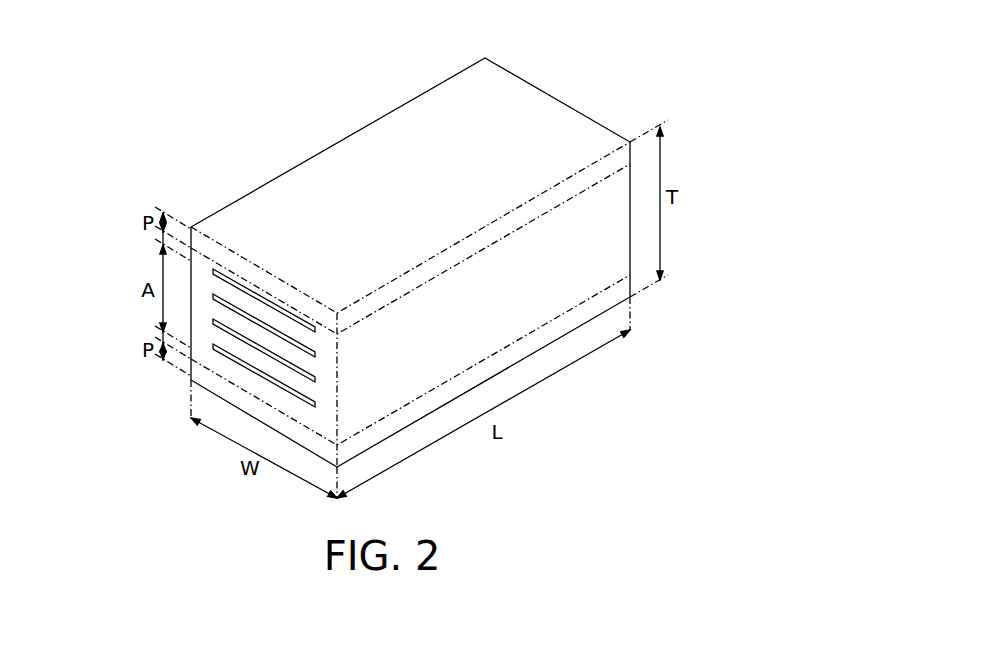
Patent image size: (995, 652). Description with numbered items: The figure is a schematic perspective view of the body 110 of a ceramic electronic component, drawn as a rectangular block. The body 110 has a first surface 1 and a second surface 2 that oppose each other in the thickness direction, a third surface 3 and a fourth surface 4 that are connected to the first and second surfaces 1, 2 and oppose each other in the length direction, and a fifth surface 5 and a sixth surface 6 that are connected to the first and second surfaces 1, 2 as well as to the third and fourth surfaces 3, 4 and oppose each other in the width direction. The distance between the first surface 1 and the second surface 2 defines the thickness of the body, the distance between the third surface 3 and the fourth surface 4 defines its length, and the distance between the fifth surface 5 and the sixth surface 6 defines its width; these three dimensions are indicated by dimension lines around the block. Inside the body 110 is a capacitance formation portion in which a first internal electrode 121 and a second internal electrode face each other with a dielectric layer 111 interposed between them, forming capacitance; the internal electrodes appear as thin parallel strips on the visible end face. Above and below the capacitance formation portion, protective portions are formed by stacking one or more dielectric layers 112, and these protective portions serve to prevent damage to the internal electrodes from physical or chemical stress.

The body 110 is at (261, 213).
The dielectric layer 111 is at (247, 292).
The dielectric layer 112 is at (233, 264).
The first internal electrode 121 is at (214, 274).
The first surface 1 is at (527, 352).
The second surface 2 is at (422, 140).
The third surface 3 is at (230, 398).
The fourth surface 4 is at (618, 242).
The fifth surface 5 is at (566, 305).
The sixth surface 6 is at (365, 164).